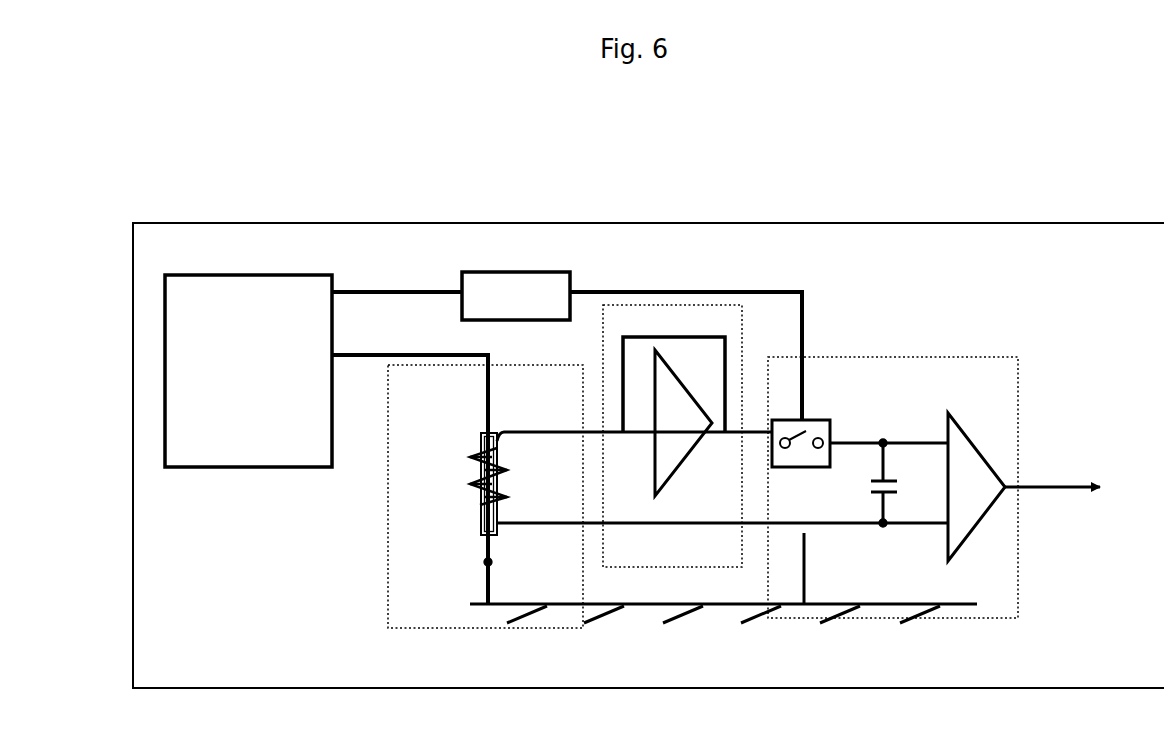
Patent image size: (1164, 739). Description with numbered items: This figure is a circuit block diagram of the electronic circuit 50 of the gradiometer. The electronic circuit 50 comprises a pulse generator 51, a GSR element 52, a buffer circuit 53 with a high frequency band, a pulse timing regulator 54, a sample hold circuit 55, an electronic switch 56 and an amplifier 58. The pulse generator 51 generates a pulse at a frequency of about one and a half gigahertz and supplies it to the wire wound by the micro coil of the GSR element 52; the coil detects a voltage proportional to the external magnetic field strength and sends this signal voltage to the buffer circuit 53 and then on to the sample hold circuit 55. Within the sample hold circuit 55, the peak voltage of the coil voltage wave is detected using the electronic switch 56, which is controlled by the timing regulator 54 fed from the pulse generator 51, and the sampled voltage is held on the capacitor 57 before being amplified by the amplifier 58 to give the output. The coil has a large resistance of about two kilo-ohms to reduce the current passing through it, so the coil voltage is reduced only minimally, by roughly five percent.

The electronic circuit 50 is at (445, 218).
The pulse generator 51 is at (240, 478).
The GSR element 52 is at (465, 488).
The buffer circuit 53 is at (722, 305).
The pulse timing regulator 54 is at (530, 270).
The sample hold circuit 55 is at (930, 347).
The electronic switch 56 is at (820, 413).
The capacitor 57 is at (870, 500).
The amplifier 58 is at (987, 455).